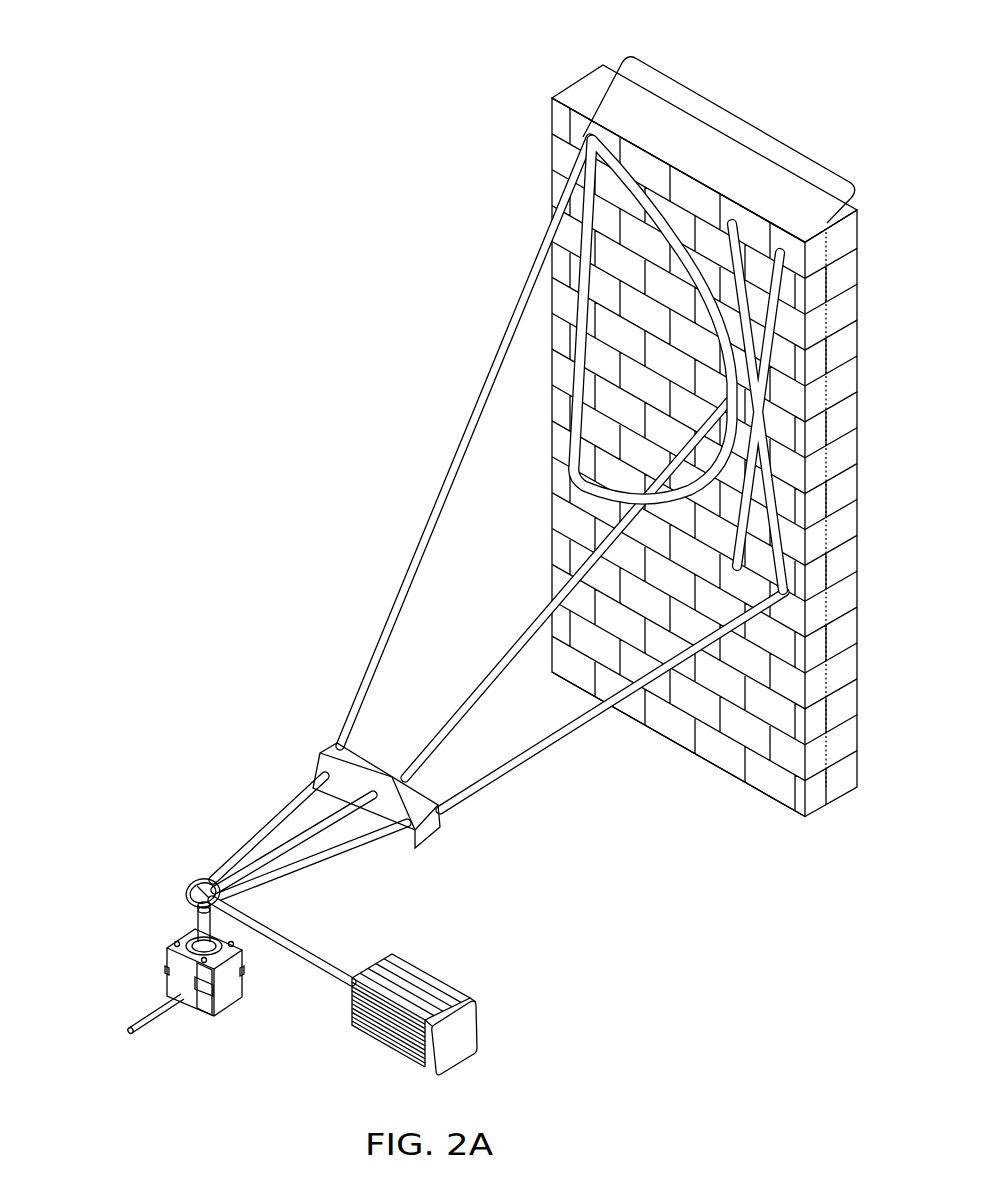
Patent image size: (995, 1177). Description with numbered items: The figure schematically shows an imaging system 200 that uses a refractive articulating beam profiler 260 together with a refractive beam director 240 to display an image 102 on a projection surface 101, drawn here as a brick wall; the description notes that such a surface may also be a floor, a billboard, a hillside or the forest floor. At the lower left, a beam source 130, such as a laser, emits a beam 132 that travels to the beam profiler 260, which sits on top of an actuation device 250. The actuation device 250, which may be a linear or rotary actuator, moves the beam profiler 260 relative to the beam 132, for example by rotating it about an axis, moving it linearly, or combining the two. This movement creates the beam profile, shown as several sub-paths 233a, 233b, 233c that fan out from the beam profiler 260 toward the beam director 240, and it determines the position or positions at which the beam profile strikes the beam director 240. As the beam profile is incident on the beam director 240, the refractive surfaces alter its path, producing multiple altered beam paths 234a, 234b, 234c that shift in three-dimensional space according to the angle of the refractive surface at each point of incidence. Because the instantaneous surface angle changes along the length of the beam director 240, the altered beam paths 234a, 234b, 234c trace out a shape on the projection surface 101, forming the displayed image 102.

The imaging system 200 is at (95, 78).
The projection surface 101 is at (552, 115).
The image 102 is at (747, 119).
The beam source 130 is at (407, 962).
The beam 132 is at (318, 968).
The refractive beam director 240 is at (427, 802).
The actuation device 250 is at (165, 942).
The beam profiler 260 is at (197, 880).
The beam profile 233a is at (298, 797).
The beam profile 233b is at (273, 877).
The beam profile 233c is at (315, 790).
The altered beam path 234a is at (438, 510).
The altered beam path 234b is at (519, 632).
The altered beam path 234c is at (567, 728).